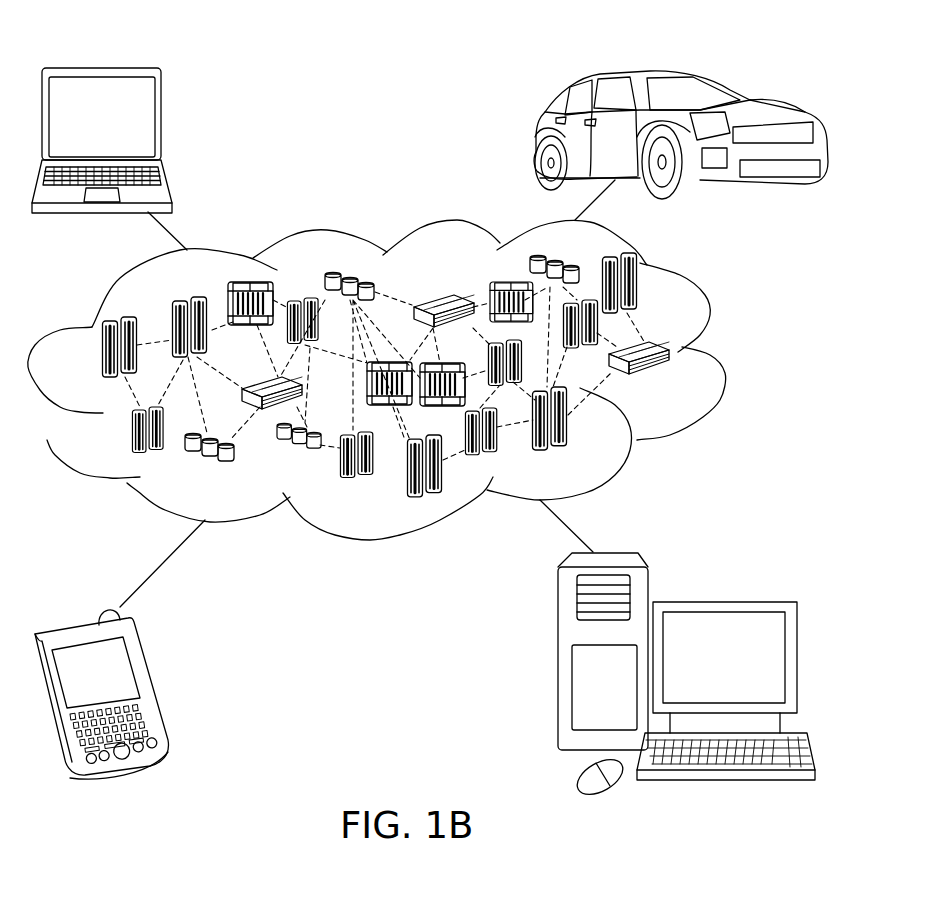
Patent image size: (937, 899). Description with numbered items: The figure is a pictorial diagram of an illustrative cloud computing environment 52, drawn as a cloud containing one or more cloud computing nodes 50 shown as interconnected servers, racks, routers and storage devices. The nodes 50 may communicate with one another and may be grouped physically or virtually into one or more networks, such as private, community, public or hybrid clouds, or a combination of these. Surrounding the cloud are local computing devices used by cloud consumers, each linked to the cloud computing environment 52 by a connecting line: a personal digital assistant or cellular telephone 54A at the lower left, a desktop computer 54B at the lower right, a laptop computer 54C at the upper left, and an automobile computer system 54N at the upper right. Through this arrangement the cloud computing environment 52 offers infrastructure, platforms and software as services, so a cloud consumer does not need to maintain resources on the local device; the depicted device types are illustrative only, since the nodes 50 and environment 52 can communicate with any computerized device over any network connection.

The cloud computing nodes 50 is at (721, 279).
The cloud computing environment 52 is at (725, 357).
The personal digital assistant or cellular telephone 54A is at (153, 687).
The desktop computer 54B is at (722, 602).
The laptop computer 54C is at (160, 122).
The automobile computer system 54N is at (535, 136).